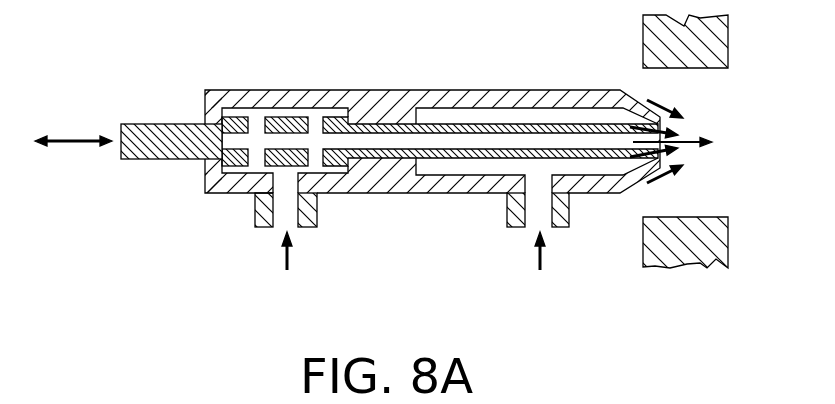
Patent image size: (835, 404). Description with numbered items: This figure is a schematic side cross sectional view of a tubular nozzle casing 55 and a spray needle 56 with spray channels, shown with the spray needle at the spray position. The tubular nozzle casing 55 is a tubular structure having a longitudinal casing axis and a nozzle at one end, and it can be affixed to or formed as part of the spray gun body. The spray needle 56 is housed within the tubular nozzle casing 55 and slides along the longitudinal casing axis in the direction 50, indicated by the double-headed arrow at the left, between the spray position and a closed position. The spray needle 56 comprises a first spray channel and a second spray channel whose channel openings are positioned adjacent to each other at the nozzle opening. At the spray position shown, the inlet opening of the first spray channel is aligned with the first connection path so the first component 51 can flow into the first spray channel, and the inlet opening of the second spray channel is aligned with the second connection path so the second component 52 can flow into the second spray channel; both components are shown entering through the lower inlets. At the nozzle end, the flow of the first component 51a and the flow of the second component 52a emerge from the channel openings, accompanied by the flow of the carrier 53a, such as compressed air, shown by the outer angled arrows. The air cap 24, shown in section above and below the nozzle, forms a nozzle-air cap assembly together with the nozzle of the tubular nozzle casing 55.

The air cap 24 is at (730, 238).
The sliding direction 50 is at (75, 139).
The first component 51 is at (285, 258).
The flow of the first component 51a is at (688, 138).
The second component 52 is at (542, 257).
The flow of the second component 52a is at (679, 152).
The flow of the carrier 53a is at (672, 102).
The tubular nozzle casing 55 is at (432, 60).
The spray needle 56 is at (110, 178).